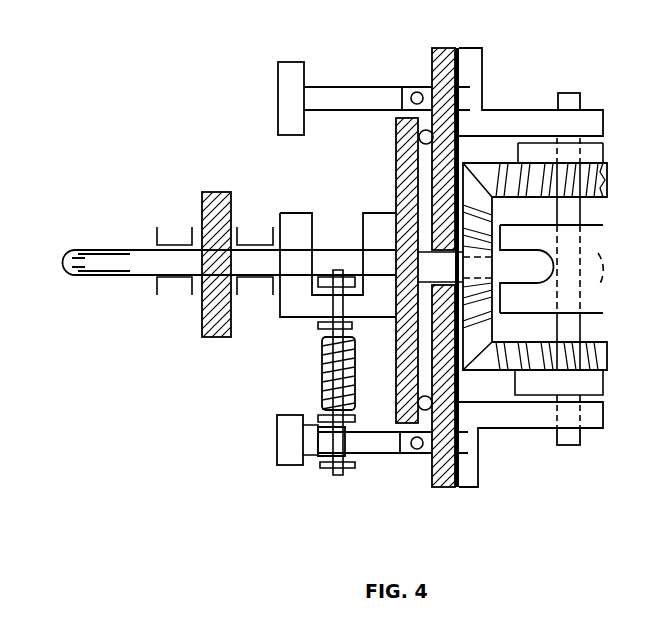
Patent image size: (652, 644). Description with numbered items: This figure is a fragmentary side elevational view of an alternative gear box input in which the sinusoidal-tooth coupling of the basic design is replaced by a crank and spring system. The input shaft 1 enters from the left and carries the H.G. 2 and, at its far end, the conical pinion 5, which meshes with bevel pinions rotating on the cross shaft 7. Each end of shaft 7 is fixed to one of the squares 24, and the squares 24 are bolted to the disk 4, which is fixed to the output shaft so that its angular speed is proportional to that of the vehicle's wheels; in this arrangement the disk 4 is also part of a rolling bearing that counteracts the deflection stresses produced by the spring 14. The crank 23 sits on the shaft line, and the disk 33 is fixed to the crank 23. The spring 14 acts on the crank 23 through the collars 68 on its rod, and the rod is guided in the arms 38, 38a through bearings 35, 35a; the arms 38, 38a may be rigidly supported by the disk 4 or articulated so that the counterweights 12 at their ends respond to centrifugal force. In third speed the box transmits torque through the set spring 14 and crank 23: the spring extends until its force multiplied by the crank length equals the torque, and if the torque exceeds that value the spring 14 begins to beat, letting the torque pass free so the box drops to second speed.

The input shaft 1 is at (100, 270).
The H.G. 2 is at (206, 193).
The disk 4 is at (443, 48).
The conical pinion 5 is at (477, 212).
The shaft 7 is at (568, 98).
The counterweights 12 is at (290, 83).
The spring 14 is at (348, 350).
The crank 23 is at (298, 237).
The squares 24 is at (500, 118).
The disk 33 is at (397, 157).
The bearing 35 is at (417, 450).
The bearing 35a is at (416, 92).
The arms 38 is at (380, 443).
The beam 38a is at (355, 98).
The collar 68 is at (323, 418).